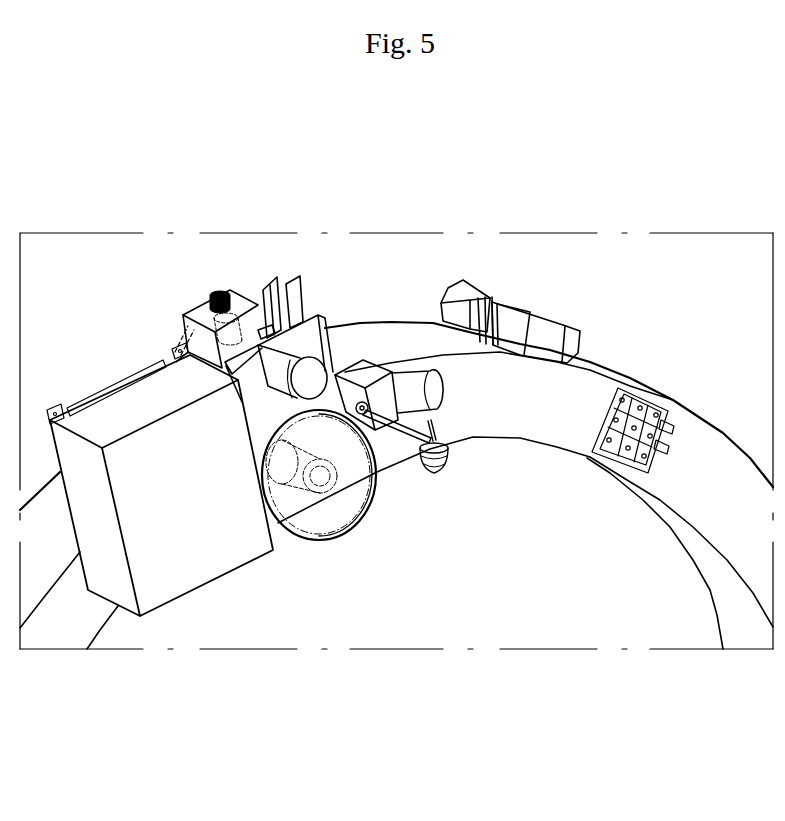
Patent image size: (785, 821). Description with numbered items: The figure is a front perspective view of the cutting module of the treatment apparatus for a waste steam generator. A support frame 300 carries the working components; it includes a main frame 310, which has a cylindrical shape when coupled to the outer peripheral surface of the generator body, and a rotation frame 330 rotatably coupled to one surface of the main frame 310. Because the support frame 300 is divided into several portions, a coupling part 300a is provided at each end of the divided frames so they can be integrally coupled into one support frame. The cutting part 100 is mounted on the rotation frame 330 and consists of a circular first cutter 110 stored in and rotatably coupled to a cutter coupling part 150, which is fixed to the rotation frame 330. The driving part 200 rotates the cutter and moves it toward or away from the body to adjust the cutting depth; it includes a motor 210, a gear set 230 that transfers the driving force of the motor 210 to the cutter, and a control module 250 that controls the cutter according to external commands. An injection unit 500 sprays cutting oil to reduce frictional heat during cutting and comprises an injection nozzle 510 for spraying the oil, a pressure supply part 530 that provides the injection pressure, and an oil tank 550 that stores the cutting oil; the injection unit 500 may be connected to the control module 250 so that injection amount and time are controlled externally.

The cutting part 100 is at (242, 608).
The first cutter 110 is at (322, 522).
The cutter coupling part 150 is at (296, 463).
The driving part 200 is at (190, 358).
The motor 210 is at (293, 347).
The gear set 230 is at (201, 293).
The control module 250 is at (138, 410).
The support frame 300 is at (396, 367).
The main frame 310 is at (368, 348).
The rotation frame 330 is at (557, 393).
The coupling part 300a is at (674, 410).
The injection unit 500 is at (407, 579).
The injection nozzle 510 is at (383, 400).
The pressure supply part 530 is at (423, 393).
The oil tank 550 is at (342, 538).